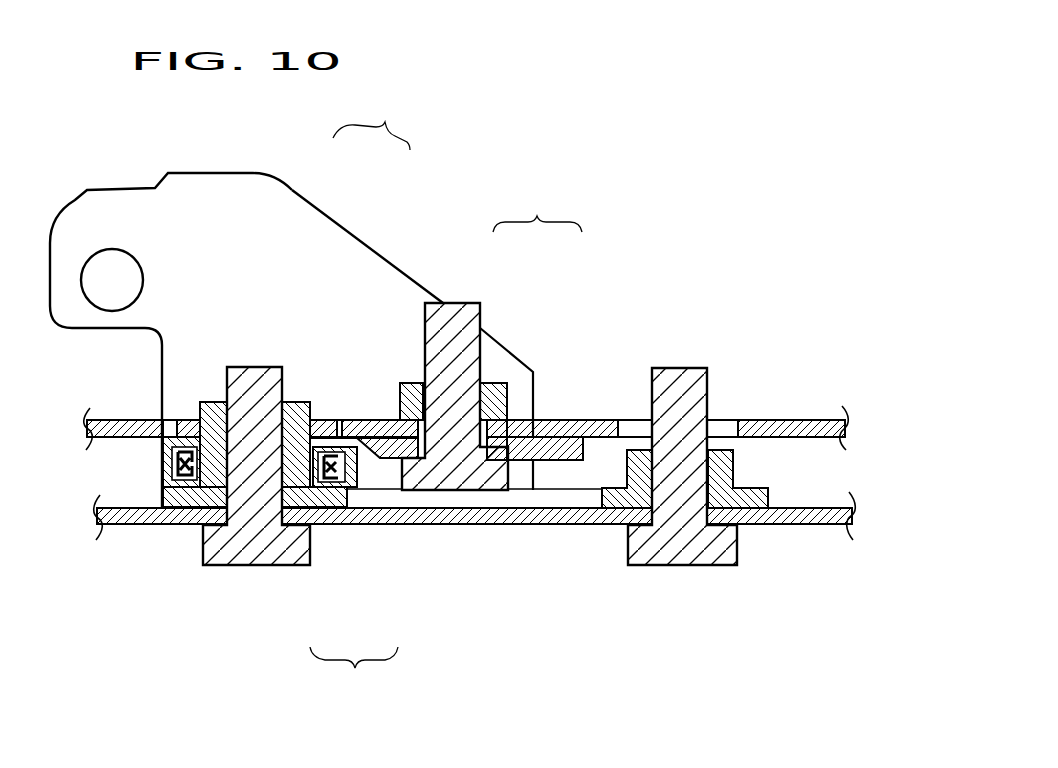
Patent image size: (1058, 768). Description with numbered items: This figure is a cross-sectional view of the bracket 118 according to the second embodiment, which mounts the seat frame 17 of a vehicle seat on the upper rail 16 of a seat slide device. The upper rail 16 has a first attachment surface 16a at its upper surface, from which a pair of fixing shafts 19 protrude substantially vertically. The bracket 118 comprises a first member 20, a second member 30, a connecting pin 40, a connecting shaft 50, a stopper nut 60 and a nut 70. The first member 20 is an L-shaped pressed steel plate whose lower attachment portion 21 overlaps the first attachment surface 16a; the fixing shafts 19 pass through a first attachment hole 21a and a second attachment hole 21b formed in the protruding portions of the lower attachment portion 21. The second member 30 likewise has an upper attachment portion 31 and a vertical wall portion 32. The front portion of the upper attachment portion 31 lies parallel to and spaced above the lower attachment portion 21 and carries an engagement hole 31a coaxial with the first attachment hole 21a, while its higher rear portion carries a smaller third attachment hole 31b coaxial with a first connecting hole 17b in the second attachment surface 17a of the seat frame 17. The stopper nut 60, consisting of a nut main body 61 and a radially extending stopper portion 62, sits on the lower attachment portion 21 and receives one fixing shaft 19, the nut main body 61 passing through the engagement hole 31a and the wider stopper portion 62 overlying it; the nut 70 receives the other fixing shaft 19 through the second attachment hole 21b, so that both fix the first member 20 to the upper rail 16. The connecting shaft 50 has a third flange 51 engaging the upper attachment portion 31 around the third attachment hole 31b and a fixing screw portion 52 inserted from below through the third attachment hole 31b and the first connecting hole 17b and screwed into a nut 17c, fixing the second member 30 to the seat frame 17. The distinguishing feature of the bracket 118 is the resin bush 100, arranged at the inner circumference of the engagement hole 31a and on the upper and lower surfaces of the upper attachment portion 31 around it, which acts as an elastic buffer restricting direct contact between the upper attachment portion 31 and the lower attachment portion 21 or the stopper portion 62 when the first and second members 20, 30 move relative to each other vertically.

The upper rail 16 is at (753, 510).
The first attachment surface 16a is at (807, 506).
The seat frame 17 is at (818, 420).
The second attachment surface 17a is at (755, 437).
The first connecting hole 17b is at (425, 438).
The nut 17c is at (407, 437).
The fixing shaft 19 is at (257, 368).
The first member 20 is at (572, 497).
The lower attachment portion 21 is at (618, 522).
The first attachment hole 21a is at (228, 493).
The second attachment hole 21b is at (653, 495).
The second member 30 is at (371, 125).
The upper attachment portion 31 is at (365, 420).
The engagement hole 31a is at (210, 490).
The third attachment hole 31b is at (423, 447).
The vertical wall portion 32 is at (278, 270).
The connecting pin 40 is at (118, 258).
The connecting shaft 50 is at (537, 212).
The third flange 51 is at (535, 385).
The fixing screw portion 52 is at (468, 320).
The stopper nut 60 is at (354, 672).
The nut main body 61 is at (297, 500).
The stopper portion 62 is at (335, 438).
The nut 70 is at (640, 437).
The resin bush 100 is at (158, 502).
The bracket 118 is at (643, 214).